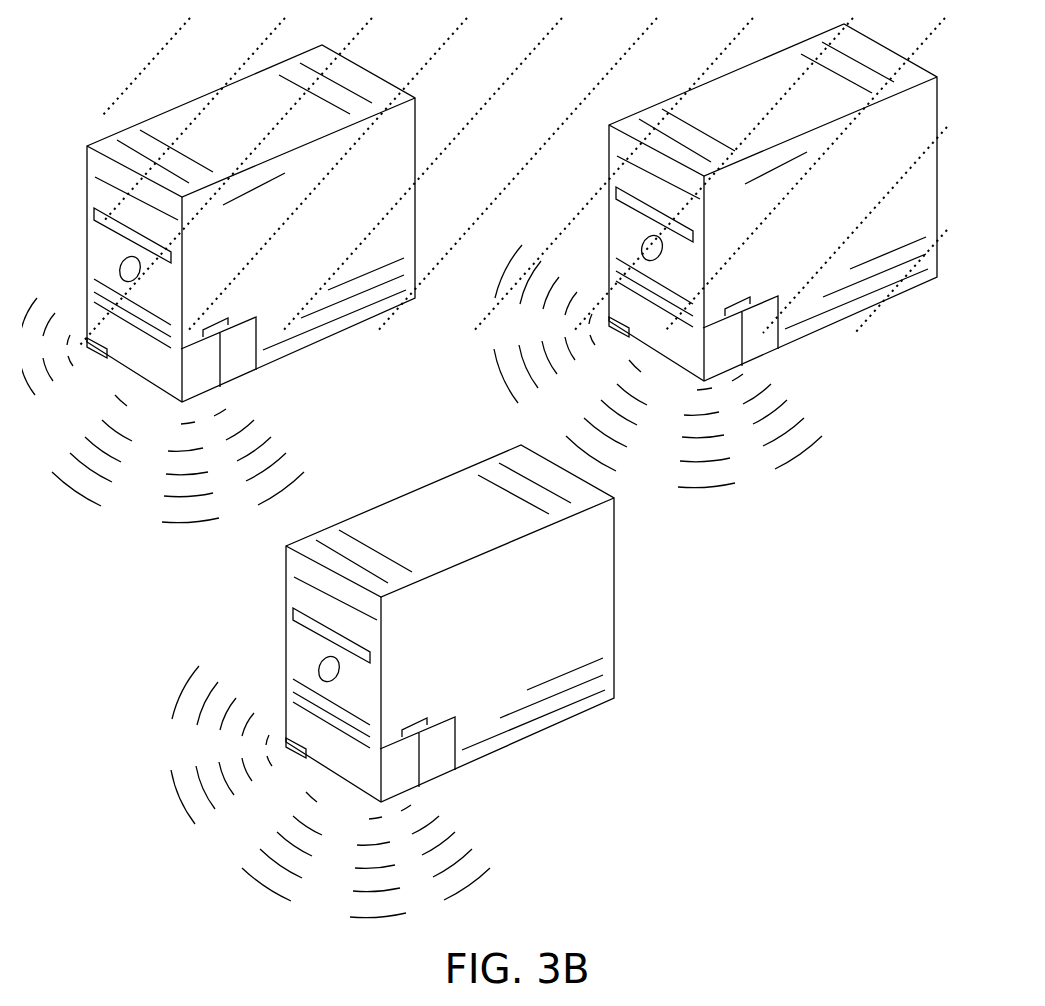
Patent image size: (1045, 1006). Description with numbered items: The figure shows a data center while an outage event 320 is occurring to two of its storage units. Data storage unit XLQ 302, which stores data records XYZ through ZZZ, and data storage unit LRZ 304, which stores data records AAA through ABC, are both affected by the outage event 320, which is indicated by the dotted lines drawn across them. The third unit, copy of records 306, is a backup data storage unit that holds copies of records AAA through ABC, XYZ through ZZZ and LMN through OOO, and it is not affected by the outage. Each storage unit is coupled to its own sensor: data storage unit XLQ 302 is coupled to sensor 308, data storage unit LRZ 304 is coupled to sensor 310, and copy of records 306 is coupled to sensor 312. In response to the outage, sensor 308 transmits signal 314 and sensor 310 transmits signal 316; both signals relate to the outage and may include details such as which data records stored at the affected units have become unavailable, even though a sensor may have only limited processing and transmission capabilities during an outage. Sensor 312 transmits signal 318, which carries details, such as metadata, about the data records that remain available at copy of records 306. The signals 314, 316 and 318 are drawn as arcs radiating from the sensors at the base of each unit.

The data storage unit XLQ 302 is at (280, 231).
The data storage unit LRZ 304 is at (758, 191).
The copy of records 306 is at (473, 623).
The sensor 308 is at (86, 377).
The sensor 310 is at (604, 347).
The sensor 312 is at (284, 769).
The signal 314 is at (163, 522).
The signal 316 is at (808, 454).
The signal 318 is at (473, 887).
The outage event 320 is at (218, 54).